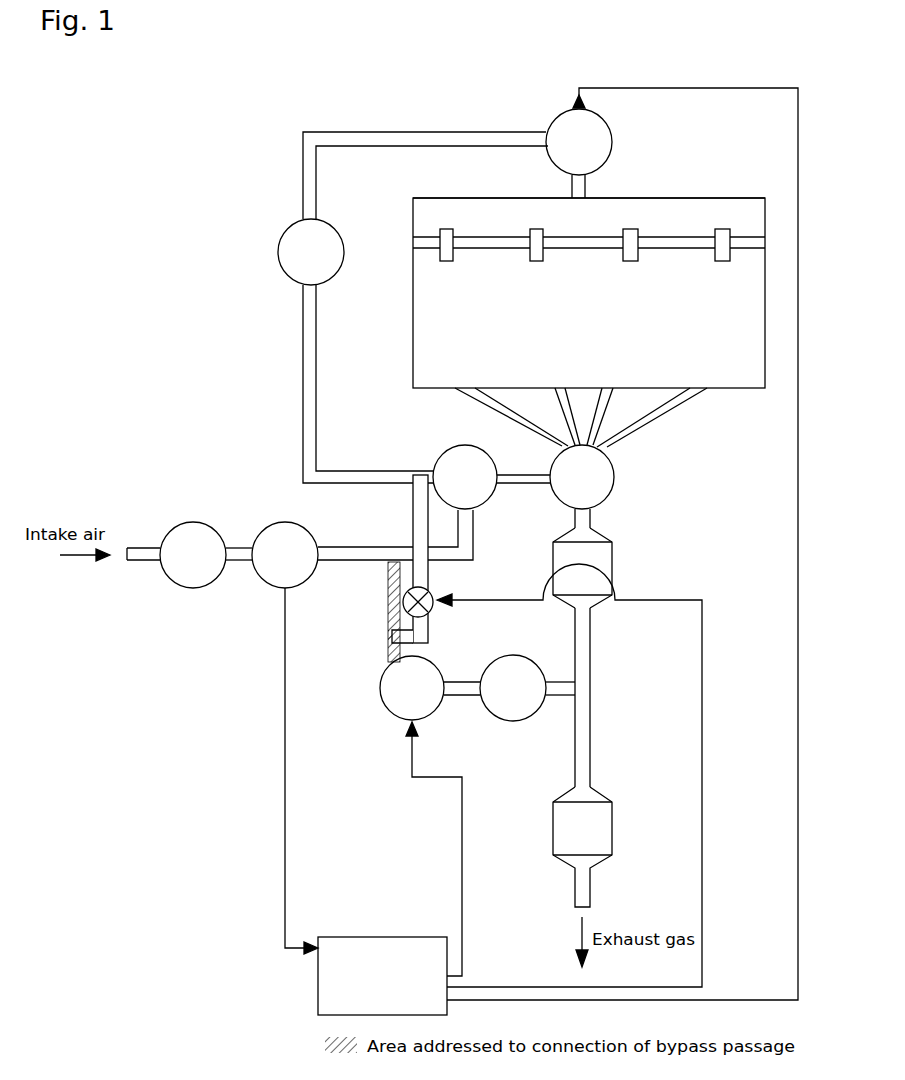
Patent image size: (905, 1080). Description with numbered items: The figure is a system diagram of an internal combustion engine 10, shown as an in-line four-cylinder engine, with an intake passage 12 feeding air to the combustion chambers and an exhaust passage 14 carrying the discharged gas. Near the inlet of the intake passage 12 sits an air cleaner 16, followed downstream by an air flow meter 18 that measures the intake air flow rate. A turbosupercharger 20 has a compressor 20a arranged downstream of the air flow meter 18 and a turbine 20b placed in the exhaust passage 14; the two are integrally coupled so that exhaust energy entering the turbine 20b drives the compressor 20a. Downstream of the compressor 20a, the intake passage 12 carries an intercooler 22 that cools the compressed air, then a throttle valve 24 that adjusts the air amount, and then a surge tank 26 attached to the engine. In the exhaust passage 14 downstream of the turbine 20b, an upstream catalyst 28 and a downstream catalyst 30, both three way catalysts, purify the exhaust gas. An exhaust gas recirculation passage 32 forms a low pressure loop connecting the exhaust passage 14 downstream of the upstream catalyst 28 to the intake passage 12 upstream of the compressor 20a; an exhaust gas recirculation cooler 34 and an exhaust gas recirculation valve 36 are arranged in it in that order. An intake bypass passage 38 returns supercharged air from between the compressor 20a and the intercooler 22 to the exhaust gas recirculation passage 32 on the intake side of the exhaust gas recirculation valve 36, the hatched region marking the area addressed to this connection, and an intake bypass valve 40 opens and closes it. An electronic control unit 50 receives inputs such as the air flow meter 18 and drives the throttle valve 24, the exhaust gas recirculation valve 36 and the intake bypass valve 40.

The internal combustion engine 10 is at (703, 188).
The intake passage 12 is at (306, 355).
The exhaust passage 14 is at (583, 647).
The air cleaner 16 is at (192, 590).
The air flow meter 18 is at (283, 521).
The turbosupercharger 20 is at (527, 493).
The compressor 20a is at (442, 452).
The turbine 20b is at (615, 482).
The intercooler 22 is at (278, 252).
The throttle valve 24 is at (612, 142).
The surge tank 26 is at (423, 198).
The upstream catalyst 28 is at (600, 568).
The downstream catalyst 30 is at (600, 830).
The exhaust gas recirculation passage 32 is at (462, 698).
The exhaust gas recirculation cooler 34 is at (508, 728).
The exhaust gas recirculation valve 36 is at (386, 712).
The intake bypass passage 38 is at (416, 511).
The intake bypass valve 40 is at (433, 610).
The electronic control unit 50 is at (417, 937).